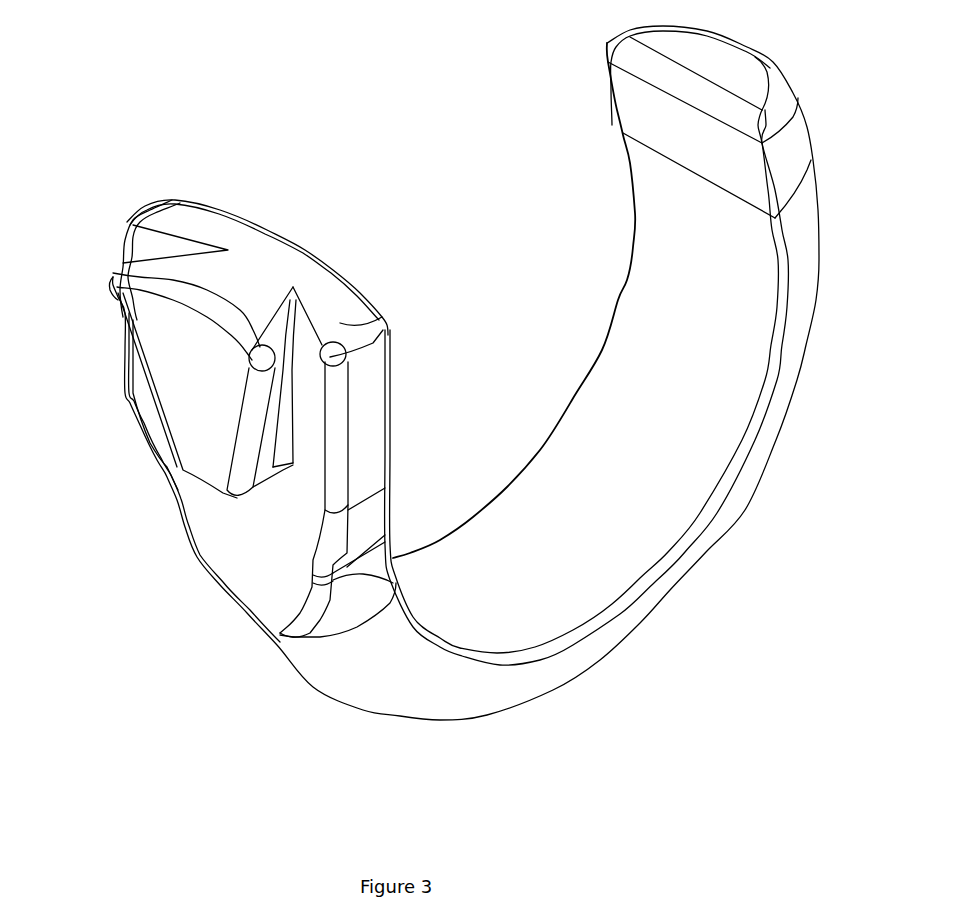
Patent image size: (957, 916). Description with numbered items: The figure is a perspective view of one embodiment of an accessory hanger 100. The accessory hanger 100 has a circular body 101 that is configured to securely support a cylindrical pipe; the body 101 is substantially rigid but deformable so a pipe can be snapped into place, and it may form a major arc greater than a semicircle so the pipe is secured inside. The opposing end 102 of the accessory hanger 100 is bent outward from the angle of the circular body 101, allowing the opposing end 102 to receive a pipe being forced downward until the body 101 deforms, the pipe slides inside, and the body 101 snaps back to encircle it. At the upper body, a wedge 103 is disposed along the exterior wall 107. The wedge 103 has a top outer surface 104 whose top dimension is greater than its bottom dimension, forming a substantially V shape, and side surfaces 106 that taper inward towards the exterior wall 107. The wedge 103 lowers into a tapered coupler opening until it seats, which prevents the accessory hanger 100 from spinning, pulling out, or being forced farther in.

The accessory hanger 100 is at (155, 52).
The circular body 101 is at (597, 552).
The opposing end 102 is at (787, 168).
The wedge 103 is at (155, 334).
The top outer surface 104 is at (227, 292).
The side surfaces 106 is at (145, 242).
The exterior wall 107 is at (320, 447).